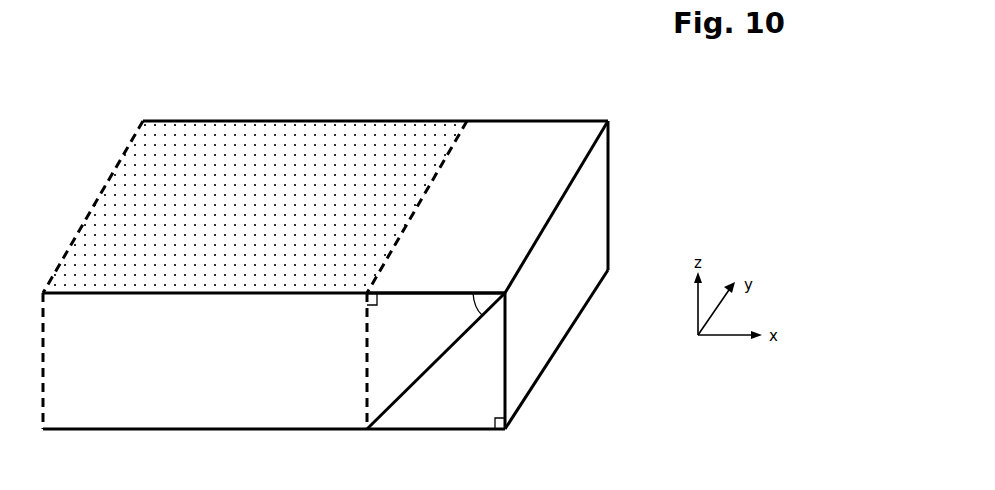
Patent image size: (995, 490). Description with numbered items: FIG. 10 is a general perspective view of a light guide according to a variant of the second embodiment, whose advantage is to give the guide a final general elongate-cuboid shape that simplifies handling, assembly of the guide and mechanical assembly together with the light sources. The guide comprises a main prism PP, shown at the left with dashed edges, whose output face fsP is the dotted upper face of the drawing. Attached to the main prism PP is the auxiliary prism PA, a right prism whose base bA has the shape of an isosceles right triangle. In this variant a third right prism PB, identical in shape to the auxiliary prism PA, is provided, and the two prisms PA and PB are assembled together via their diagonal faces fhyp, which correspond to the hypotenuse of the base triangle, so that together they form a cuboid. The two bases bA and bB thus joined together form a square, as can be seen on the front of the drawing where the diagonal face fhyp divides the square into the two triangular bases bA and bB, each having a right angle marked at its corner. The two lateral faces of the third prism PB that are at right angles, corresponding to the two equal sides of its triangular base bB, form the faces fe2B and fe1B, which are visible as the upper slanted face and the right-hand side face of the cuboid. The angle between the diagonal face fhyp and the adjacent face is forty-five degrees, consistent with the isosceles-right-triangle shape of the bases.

The main prism PP is at (160, 121).
The auxiliary prism PA is at (551, 121).
The third right prism PB is at (610, 188).
The output face of the main prism fsP is at (255, 207).
The second input face of the third prism fe2B is at (537, 207).
The first input face of the third prism fe1B is at (556, 349).
The base of the auxiliary prism bA is at (436, 317).
The base of the third prism bB is at (483, 361).
The diagonal face fhyp is at (396, 388).